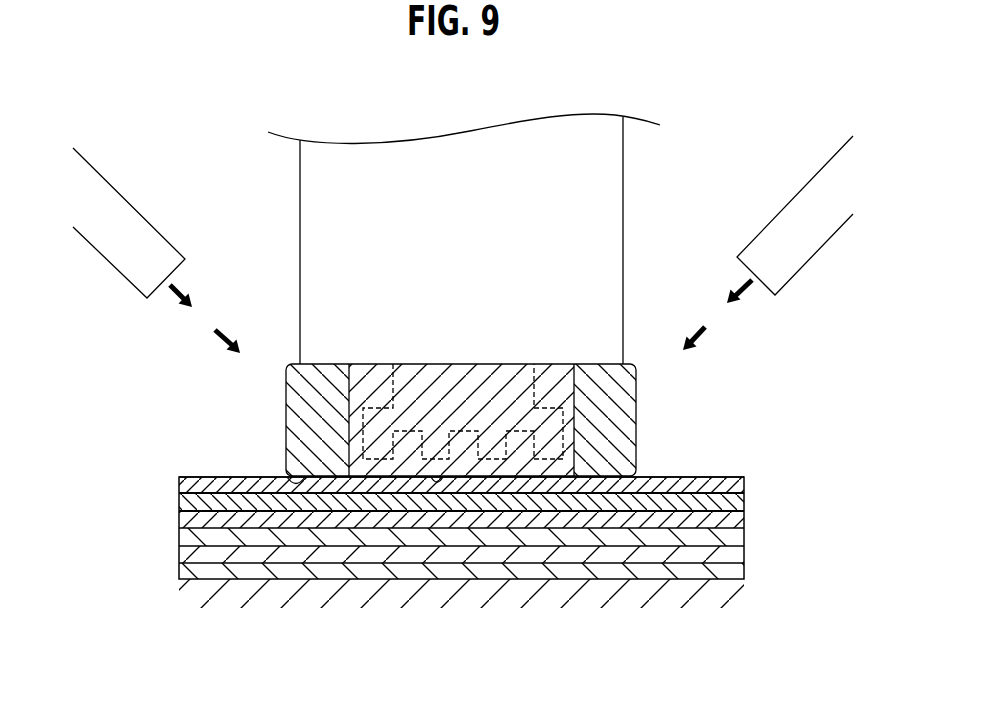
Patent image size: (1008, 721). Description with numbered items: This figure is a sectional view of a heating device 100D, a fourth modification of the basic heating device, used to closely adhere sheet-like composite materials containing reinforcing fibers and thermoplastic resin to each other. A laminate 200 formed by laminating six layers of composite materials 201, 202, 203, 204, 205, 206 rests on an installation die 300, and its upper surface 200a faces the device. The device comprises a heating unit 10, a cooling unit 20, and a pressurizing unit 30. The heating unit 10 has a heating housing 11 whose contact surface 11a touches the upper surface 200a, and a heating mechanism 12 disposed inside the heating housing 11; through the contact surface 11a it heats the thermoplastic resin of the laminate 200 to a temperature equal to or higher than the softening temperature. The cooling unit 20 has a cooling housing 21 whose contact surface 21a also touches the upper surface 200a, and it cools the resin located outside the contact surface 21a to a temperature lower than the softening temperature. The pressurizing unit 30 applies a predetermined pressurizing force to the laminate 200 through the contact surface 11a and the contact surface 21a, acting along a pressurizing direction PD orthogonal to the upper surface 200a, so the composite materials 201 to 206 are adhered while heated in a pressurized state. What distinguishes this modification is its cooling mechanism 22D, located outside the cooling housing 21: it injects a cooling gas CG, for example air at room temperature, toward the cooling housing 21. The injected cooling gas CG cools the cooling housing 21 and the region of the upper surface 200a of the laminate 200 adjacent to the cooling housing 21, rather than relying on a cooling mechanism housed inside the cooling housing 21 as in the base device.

The heating device 100D is at (215, 146).
The cooling mechanism 22D is at (143, 212).
The cooling gas CG is at (183, 281).
The pressurizing direction PD is at (464, 186).
The pressurizing unit 30 is at (603, 289).
The cooling unit 20 is at (300, 405).
The cooling housing 21 is at (325, 380).
The contact surface 21a is at (296, 478).
The heating unit 10 is at (375, 365).
The heating housing 11 is at (492, 372).
The contact surface 11a is at (433, 478).
The heating mechanism 12 is at (548, 405).
The laminate 200 is at (175, 462).
The upper surface 200a is at (685, 477).
The composite material 201 is at (742, 480).
The composite material 202 is at (742, 500).
The composite material 203 is at (737, 518).
The composite material 204 is at (181, 535).
The composite material 205 is at (182, 553).
The composite material 206 is at (182, 571).
The installation die 300 is at (742, 589).